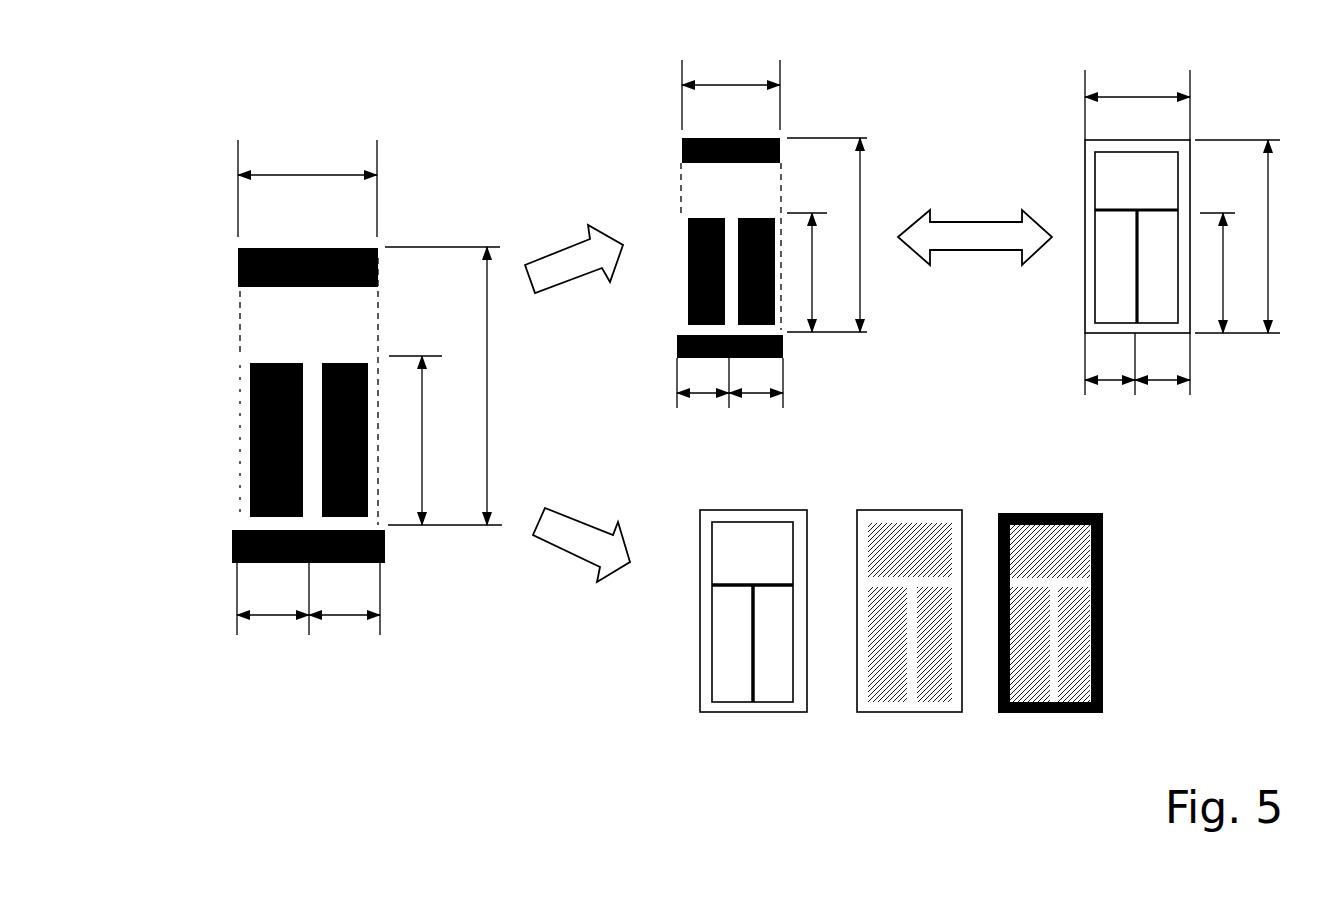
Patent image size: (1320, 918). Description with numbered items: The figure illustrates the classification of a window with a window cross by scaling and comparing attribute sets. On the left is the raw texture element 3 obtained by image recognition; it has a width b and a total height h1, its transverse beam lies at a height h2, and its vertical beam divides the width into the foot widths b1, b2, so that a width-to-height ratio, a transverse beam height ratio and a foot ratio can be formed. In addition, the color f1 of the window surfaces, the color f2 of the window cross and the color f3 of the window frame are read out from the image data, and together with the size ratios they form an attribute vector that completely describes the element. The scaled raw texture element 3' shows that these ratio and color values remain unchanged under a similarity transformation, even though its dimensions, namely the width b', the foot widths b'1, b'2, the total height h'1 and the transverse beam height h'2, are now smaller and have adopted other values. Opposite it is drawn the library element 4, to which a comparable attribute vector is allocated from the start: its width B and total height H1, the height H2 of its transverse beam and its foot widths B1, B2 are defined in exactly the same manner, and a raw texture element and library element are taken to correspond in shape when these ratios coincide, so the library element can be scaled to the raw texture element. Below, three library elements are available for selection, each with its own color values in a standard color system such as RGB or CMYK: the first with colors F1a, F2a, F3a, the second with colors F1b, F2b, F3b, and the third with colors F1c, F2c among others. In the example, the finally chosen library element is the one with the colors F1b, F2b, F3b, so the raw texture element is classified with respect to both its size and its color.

The raw texture element 3 is at (267, 320).
The scaled raw texture element 3' is at (689, 205).
The library element 4 is at (1070, 132).
The color of the window surfaces f1 is at (250, 490).
The color of the window cross f2 is at (312, 362).
The color of the window frame f3 is at (232, 277).
The width of the raw texture element b is at (307, 181).
The first foot width b1 is at (273, 619).
The second foot width b2 is at (344, 619).
The height of the raw texture element h1 is at (460, 386).
The height of the transverse beam h2 is at (427, 440).
The width of structure 3' b' is at (731, 84).
The partial width 1 of 3' b'1 is at (704, 401).
The partial width 2 of 3' b'2 is at (756, 401).
The total height of 3' h'1 is at (845, 235).
The web height of 3' h'2 is at (822, 272).
The width of the library element B is at (1137, 98).
The first foot width of the library element B1 is at (1110, 383).
The second foot width of the library element B2 is at (1162, 383).
The total height of the library element H1 is at (1252, 236).
The height of the transverse beam of the library element H2 is at (1232, 273).
The first color value of the first library element F1a is at (772, 542).
The second color value of the first library element F2a is at (735, 588).
The third color value of the first library element F3a is at (758, 708).
The first color value of the second library element F1b is at (930, 525).
The second color value of the second library element F2b is at (903, 580).
The third color value of the second library element F3b is at (925, 708).
The first color value of the third library element F1c is at (1093, 513).
The second color value of the third library element F2c is at (1072, 585).